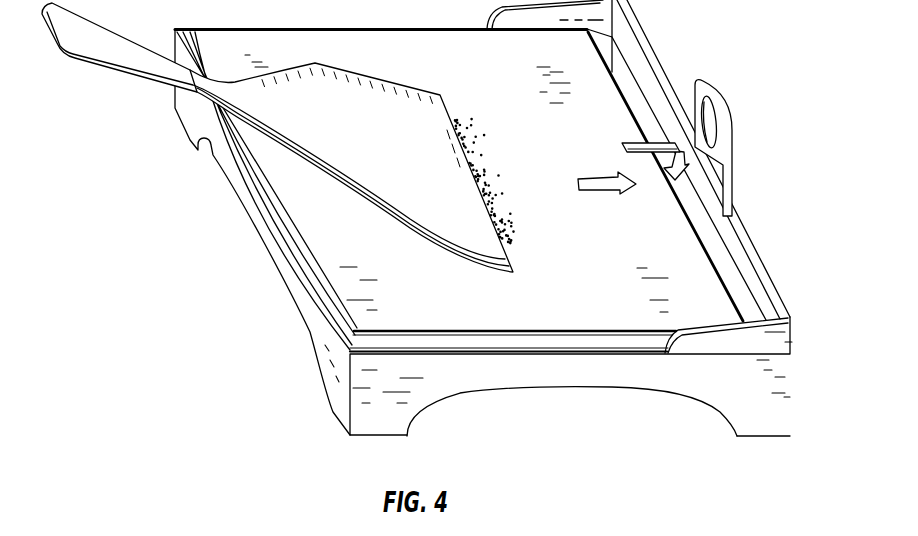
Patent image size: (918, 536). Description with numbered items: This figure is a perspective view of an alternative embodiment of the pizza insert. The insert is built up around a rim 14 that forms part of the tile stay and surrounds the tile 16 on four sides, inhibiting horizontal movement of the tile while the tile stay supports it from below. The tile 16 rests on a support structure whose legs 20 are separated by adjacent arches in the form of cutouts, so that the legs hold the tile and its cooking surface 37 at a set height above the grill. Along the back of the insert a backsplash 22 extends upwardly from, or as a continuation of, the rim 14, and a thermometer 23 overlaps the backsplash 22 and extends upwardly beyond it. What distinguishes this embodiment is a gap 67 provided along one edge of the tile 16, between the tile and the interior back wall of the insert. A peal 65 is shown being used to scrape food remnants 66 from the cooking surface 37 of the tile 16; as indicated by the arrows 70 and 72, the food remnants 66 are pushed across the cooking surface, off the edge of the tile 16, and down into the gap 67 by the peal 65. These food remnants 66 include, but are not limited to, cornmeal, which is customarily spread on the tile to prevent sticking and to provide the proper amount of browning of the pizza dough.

The rim 14 is at (439, 355).
The tile 16 is at (313, 230).
The legs 20 is at (368, 418).
The backsplash 22 is at (753, 277).
The thermometer 23 is at (712, 132).
The cooking surface 37 is at (383, 255).
The peal 65 is at (318, 128).
The food remnants 66 is at (493, 162).
The gap 67 is at (677, 198).
The arrow 70 is at (615, 180).
The arrow 72 is at (648, 143).